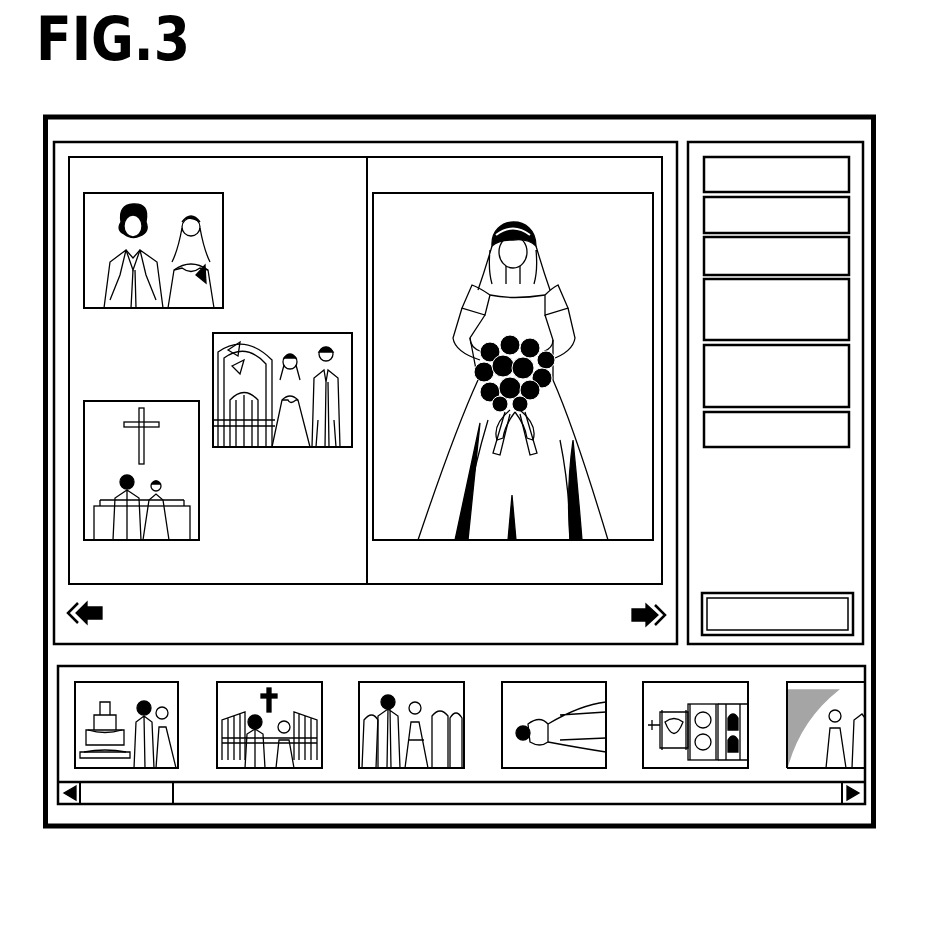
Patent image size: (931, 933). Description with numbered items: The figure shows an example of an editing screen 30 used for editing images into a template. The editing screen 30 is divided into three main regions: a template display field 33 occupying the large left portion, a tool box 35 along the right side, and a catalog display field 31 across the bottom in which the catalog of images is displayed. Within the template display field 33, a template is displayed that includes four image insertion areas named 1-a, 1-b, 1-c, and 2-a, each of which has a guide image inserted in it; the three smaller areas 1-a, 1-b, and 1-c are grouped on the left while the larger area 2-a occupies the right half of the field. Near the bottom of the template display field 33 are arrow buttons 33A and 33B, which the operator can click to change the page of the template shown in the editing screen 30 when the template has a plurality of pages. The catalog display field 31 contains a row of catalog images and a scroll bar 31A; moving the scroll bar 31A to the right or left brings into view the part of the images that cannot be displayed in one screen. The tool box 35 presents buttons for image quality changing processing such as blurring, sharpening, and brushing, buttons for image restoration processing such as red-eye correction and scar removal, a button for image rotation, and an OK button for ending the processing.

The editing screen 30 is at (777, 116).
The template display field 33 is at (80, 150).
The tool box 35 is at (808, 153).
The catalog display field 31 is at (768, 768).
The scroll bar 31A is at (235, 794).
The arrow button 33A is at (642, 607).
The arrow button 33B is at (93, 606).
The image insertion area 2-a is at (478, 193).
The image insertion area 1-a is at (223, 223).
The image insertion area 1-b is at (263, 333).
The image insertion area 1-c is at (199, 513).